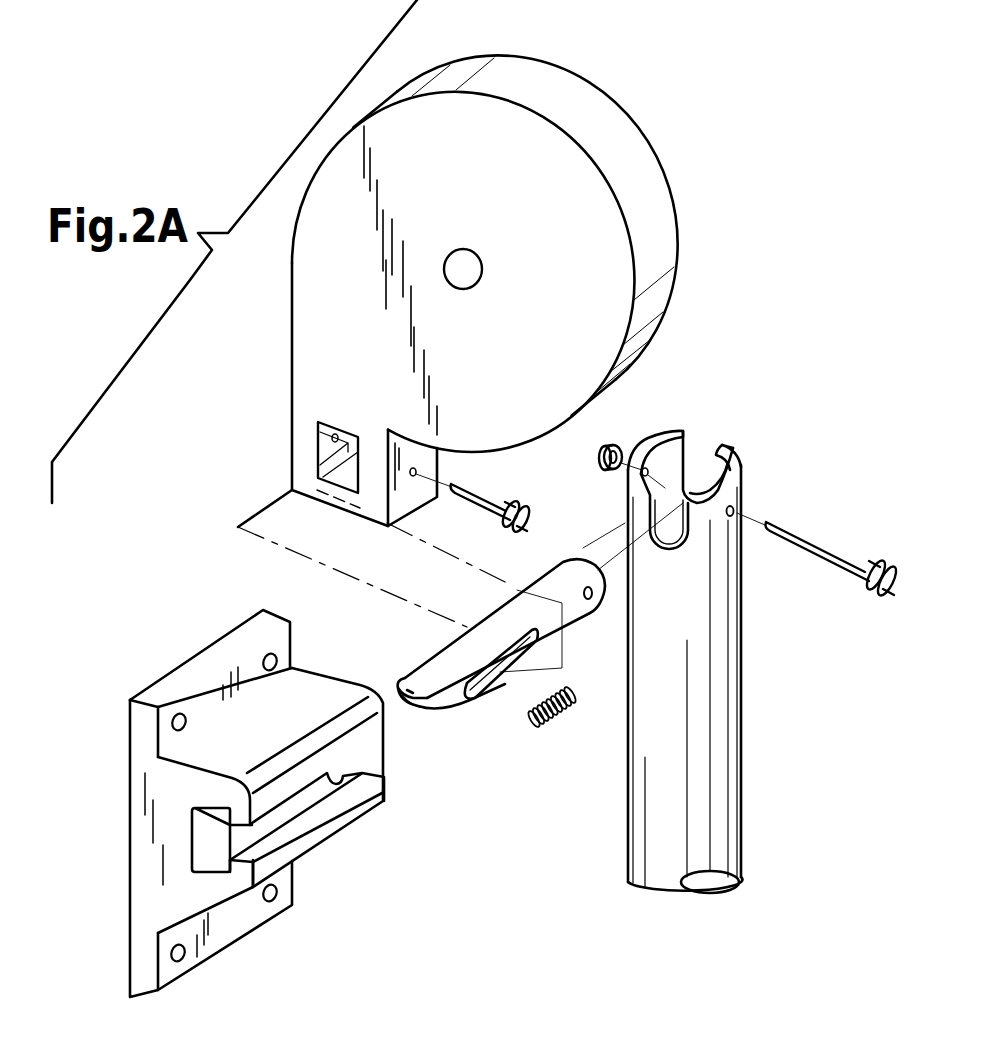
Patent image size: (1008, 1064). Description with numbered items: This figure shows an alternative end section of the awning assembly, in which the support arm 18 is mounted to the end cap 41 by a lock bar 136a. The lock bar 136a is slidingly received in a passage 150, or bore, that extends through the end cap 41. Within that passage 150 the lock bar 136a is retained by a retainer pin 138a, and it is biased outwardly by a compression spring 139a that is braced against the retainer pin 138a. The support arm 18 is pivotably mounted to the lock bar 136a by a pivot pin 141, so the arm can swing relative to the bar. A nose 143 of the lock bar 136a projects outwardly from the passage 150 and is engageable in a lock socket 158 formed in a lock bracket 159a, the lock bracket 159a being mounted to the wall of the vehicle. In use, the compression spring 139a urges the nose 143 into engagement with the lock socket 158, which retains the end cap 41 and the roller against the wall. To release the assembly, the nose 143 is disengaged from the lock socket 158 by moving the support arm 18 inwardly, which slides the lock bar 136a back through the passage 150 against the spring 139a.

The end cap 41 is at (613, 250).
The passage 150 is at (322, 452).
The retainer pin 138a is at (527, 500).
The pivot pin 141 is at (805, 540).
The support arm 18 is at (722, 767).
The lock bar 136a is at (585, 568).
The nose 143 is at (424, 707).
The compression spring 139a is at (554, 718).
The lock bracket 159a is at (130, 802).
The lock socket 158 is at (203, 846).